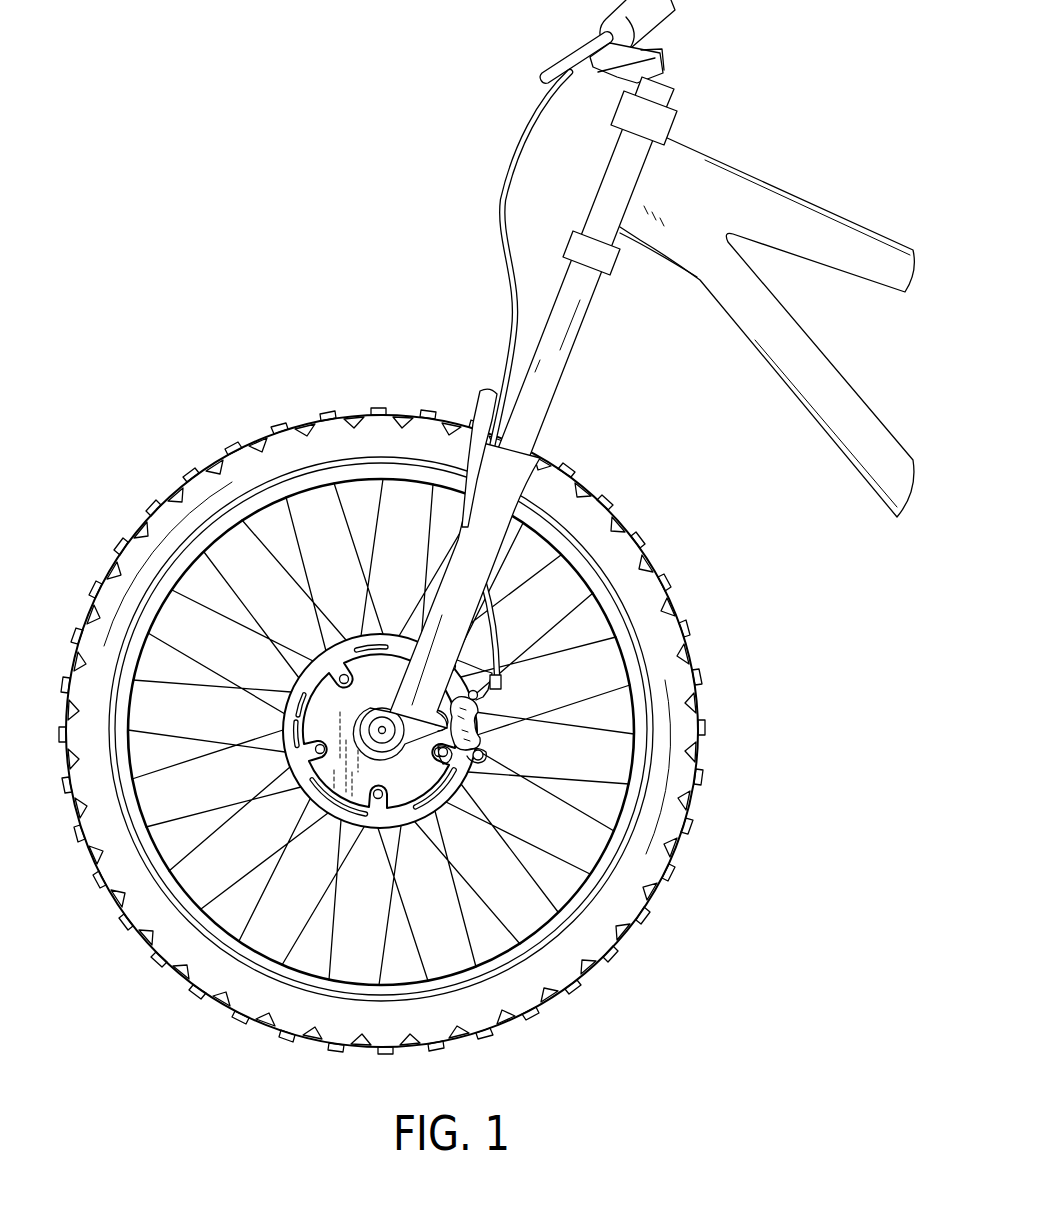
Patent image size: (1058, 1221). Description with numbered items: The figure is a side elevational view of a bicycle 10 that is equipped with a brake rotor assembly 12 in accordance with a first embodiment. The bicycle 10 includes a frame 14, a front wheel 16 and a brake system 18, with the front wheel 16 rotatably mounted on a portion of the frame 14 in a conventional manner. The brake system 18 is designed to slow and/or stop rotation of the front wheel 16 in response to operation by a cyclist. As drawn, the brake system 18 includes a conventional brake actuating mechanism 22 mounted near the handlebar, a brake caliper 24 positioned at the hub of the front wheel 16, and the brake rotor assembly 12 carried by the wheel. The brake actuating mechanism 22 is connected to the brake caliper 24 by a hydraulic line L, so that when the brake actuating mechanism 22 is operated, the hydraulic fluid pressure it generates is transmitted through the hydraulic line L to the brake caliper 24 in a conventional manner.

The bicycle 10 is at (287, 190).
The brake rotor assembly 12 is at (283, 682).
The frame 14 is at (545, 385).
The front wheel 16 is at (653, 606).
The brake system 18 is at (510, 638).
The brake actuating mechanism 22 is at (563, 60).
The brake caliper 24 is at (484, 746).
The hydraulic line L is at (503, 192).